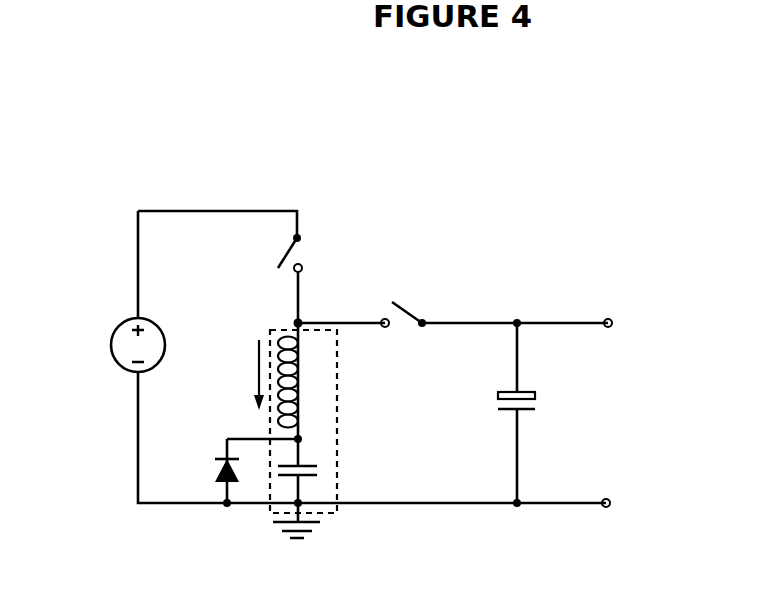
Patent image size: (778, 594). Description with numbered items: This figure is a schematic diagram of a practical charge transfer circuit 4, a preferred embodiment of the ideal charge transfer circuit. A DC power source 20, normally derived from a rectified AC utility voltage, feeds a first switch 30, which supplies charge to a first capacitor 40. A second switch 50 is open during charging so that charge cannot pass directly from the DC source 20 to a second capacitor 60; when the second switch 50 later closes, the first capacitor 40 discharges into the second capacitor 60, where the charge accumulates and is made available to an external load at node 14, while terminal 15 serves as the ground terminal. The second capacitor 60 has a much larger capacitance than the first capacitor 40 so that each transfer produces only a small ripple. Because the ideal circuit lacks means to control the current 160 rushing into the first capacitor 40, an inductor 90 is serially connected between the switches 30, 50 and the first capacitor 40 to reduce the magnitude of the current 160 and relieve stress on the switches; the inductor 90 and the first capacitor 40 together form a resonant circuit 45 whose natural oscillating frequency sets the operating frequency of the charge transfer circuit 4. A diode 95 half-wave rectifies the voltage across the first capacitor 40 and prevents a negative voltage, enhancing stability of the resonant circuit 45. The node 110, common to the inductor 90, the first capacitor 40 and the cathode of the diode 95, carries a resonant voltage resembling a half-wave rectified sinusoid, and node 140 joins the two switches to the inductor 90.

The charge transfer circuit 4 is at (524, 200).
The node 14 is at (615, 318).
The ground terminal 15 is at (612, 505).
The DC power source 20 is at (110, 345).
The first switch 30 is at (282, 253).
The first capacitor 40 is at (313, 466).
The resonant circuit 45 is at (332, 513).
The second switch 50 is at (408, 307).
The second capacitor 60 is at (536, 395).
The inductor 90 is at (298, 375).
The diode 95 is at (215, 475).
The node 110 is at (225, 438).
The node 140 is at (300, 321).
The current 160 is at (259, 363).